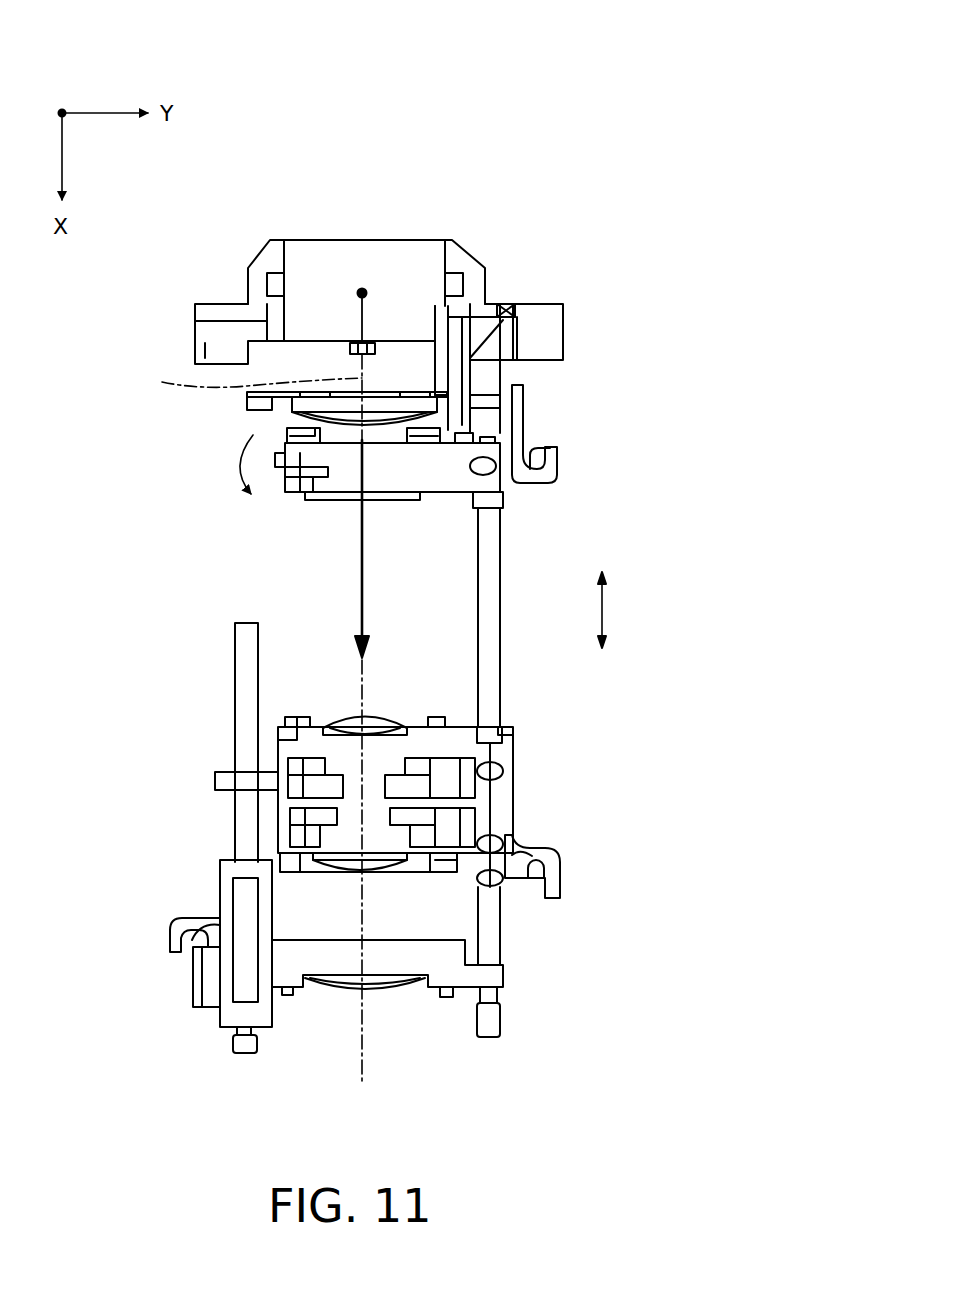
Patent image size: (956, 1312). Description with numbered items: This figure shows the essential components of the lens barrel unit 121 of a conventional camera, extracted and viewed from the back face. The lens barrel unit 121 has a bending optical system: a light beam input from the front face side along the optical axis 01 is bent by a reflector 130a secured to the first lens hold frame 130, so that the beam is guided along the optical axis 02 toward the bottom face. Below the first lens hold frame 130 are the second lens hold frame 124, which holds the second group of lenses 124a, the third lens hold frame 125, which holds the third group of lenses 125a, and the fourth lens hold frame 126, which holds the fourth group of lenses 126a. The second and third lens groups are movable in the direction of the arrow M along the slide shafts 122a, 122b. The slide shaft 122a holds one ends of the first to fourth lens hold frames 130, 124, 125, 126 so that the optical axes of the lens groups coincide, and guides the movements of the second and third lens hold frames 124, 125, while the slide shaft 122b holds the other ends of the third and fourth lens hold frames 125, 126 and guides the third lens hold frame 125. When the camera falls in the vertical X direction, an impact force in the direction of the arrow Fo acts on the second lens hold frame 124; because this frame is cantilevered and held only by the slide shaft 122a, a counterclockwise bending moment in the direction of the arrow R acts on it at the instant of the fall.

The lens barrel unit 121 is at (559, 169).
The optical axis O1 01 is at (362, 287).
The optical axis O2 02 is at (243, 384).
The reflector 130a is at (423, 273).
The first lens hold frame 130 is at (548, 332).
The second lens hold frame 124 is at (517, 485).
The second group of lenses 124a is at (420, 497).
The slide shaft 122a is at (497, 677).
The slide shaft 122b is at (245, 672).
The third lens hold frame 125 is at (507, 797).
The third group of lenses 125a is at (395, 711).
The fourth lens hold frame 126 is at (503, 973).
The fourth group of lenses 126a is at (397, 987).
The arrow R is at (242, 464).
The arrow F0 Fo is at (362, 568).
The arrow M is at (603, 610).